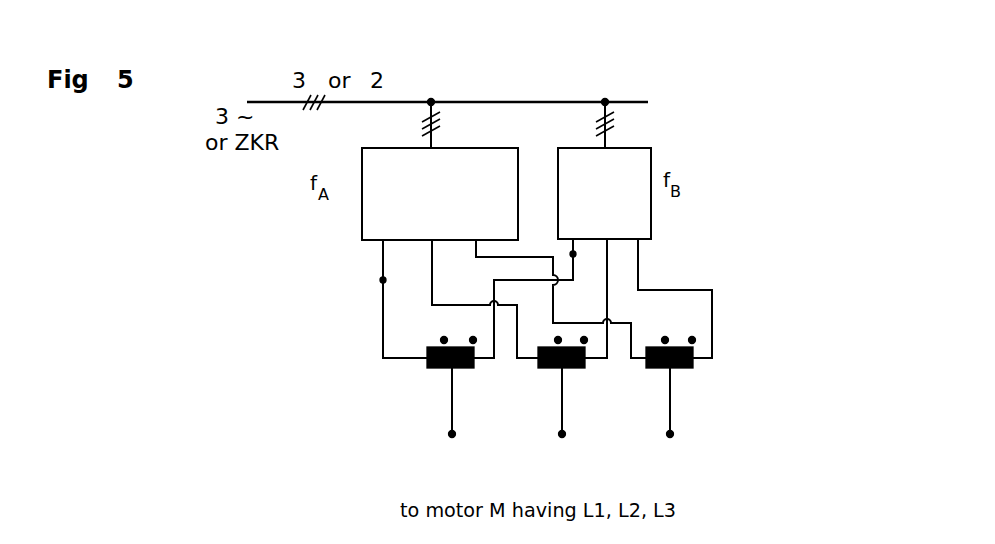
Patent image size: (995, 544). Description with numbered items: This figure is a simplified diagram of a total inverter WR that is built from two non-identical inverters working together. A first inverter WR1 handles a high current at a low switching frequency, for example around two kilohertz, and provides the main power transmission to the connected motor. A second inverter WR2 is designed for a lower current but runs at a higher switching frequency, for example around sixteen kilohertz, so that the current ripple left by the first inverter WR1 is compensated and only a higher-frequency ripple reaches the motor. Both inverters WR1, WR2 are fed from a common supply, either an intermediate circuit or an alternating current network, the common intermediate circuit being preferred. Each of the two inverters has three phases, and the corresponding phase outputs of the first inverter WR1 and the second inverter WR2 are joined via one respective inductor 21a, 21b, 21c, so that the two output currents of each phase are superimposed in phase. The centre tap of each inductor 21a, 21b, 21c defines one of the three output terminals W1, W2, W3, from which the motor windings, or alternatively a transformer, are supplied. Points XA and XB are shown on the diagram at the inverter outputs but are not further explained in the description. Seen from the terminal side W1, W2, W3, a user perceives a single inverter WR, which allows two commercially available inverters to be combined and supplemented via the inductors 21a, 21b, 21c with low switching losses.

The total inverter WR is at (549, 105).
The first inverter WR1 is at (440, 194).
The second inverter WR2 is at (604, 193).
The star point A XA is at (383, 280).
The star point B XB is at (573, 254).
The inductor 21a is at (428, 372).
The inductor 21b is at (584, 374).
The inductor 21c is at (694, 375).
The output terminal W1 is at (430, 403).
The output terminal W2 is at (540, 403).
The output terminal W3 is at (650, 403).